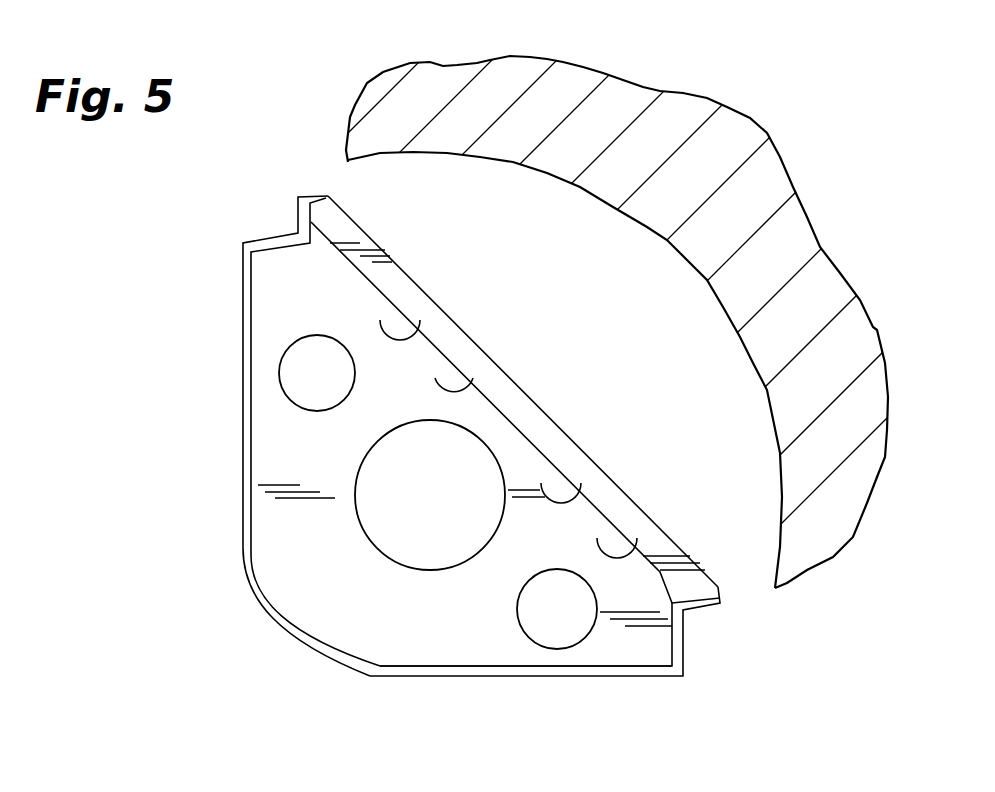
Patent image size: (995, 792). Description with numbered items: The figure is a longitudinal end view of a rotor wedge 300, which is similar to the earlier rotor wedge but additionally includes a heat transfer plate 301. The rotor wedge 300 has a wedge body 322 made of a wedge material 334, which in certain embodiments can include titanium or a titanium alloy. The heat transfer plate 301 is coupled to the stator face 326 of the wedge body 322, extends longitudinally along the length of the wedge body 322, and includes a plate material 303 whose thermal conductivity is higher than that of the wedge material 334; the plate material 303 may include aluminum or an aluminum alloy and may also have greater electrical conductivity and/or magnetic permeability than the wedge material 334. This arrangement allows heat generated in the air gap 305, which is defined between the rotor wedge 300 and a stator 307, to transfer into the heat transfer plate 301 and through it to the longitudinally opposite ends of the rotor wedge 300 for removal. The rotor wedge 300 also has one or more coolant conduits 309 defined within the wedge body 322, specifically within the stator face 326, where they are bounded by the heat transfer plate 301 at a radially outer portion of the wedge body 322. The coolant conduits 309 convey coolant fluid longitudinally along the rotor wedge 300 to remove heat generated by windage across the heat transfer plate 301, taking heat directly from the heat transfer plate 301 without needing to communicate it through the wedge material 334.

The rotor wedge 300 is at (205, 428).
The heat transfer plate 301 is at (592, 487).
The plate material 303 is at (520, 403).
The air gap 305 is at (602, 300).
The stator 307 is at (726, 204).
The coolant conduit 309 is at (448, 383).
The wedge body 322 is at (502, 638).
The stator face 326 is at (522, 427).
The wedge material 334 is at (282, 578).